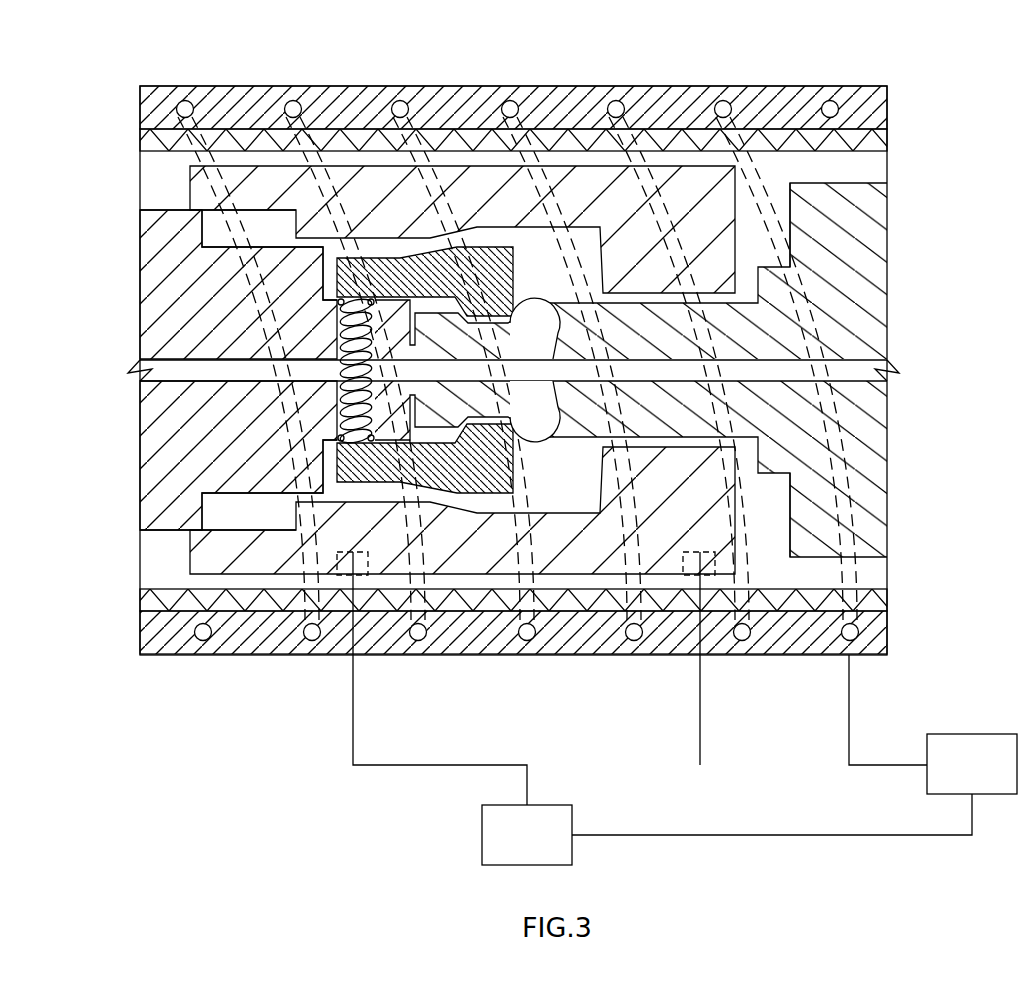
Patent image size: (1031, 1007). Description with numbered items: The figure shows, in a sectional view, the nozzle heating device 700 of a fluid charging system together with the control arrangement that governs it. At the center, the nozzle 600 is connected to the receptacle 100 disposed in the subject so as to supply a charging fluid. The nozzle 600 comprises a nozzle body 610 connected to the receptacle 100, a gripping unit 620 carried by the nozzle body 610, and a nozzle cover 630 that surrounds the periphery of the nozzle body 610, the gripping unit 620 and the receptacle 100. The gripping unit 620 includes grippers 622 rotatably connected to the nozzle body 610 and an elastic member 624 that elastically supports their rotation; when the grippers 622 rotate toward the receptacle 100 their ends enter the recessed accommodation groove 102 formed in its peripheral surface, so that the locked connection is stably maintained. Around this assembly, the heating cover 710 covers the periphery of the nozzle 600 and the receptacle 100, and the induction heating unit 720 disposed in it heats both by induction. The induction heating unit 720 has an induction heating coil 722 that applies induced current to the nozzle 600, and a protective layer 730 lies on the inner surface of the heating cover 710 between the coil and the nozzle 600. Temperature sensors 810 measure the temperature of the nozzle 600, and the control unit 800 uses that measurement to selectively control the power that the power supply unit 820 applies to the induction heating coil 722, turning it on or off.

The receptacle 100 is at (665, 425).
The accommodation groove 102 is at (560, 385).
The nozzle 600 is at (137, 451).
The nozzle body 610 is at (238, 478).
The gripping unit 620 is at (437, 502).
The grippers 622 is at (452, 470).
The elastic member 624 is at (405, 447).
The nozzle cover 630 is at (593, 547).
The nozzle heating device 700 is at (889, 82).
The heating cover 710 is at (253, 101).
The induction heating unit 720 is at (402, 92).
The induction heating coil 722 is at (618, 103).
The protective layer 730 is at (772, 133).
The control unit 800 is at (482, 835).
The temperature sensors 810 is at (340, 572).
The power supply unit 820 is at (972, 734).